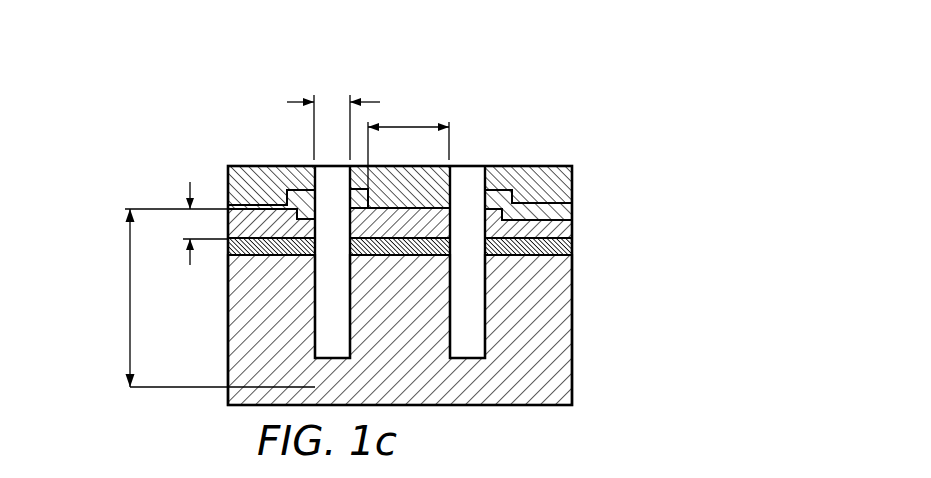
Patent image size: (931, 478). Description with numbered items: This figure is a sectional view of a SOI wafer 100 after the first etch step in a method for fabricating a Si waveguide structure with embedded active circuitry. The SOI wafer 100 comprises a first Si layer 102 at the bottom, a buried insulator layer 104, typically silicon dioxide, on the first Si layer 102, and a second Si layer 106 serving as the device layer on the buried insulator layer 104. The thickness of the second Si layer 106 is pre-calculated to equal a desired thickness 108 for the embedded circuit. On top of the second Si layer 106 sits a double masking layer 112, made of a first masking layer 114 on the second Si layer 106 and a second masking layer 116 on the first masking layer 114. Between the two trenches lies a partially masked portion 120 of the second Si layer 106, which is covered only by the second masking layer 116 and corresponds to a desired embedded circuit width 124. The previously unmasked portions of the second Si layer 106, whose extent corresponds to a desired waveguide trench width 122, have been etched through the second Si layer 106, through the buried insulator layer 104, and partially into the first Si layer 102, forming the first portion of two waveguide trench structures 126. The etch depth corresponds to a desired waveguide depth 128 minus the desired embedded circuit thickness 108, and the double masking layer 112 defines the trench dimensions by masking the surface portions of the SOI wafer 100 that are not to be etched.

The SOI wafer 100 is at (580, 134).
The first Si layer 102 is at (572, 318).
The buried insulator layer 104 is at (572, 247).
The second Si layer 106 is at (572, 232).
The desired thickness 108 is at (190, 224).
The double masking layer 112 is at (577, 217).
The first masking layer 114 is at (243, 214).
The second masking layer 116 is at (241, 168).
The partially masked portion 120 is at (391, 226).
The desired waveguide trench width 122 is at (332, 103).
The desired embedded circuit width 124 is at (408, 127).
The waveguide trench structure 126 is at (328, 217).
The desired waveguide depth 128 is at (130, 300).